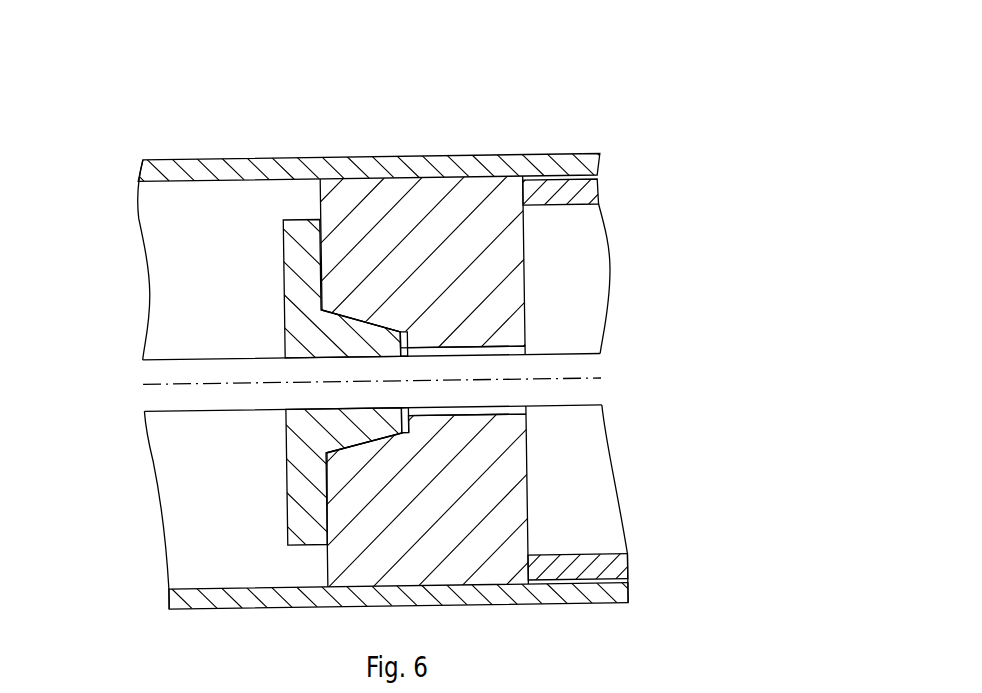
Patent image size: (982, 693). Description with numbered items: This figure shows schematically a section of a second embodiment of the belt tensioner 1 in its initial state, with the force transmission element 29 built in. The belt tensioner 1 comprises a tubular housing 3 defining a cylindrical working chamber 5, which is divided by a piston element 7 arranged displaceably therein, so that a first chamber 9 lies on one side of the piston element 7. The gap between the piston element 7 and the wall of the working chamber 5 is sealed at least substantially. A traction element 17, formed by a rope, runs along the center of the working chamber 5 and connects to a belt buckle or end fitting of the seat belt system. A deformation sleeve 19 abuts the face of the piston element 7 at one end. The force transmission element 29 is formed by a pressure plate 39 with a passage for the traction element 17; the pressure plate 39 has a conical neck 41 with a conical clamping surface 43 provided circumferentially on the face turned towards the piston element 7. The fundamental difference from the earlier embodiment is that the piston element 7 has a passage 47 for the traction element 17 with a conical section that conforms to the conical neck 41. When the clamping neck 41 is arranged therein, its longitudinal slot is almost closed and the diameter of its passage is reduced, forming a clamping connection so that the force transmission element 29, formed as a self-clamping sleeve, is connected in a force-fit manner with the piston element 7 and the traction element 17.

The belt tensioner 1 is at (643, 68).
The tubular housing 3 is at (548, 167).
The working chamber 5 is at (183, 284).
The piston element 7 is at (480, 206).
The first chamber 9 is at (180, 242).
The traction element 17 is at (172, 387).
The deformation sleeve 19 is at (581, 193).
The force transmission element 29 is at (279, 206).
The pressure plate 39 is at (297, 239).
The conical neck 41 is at (358, 337).
The conical clamping surface 43 is at (411, 333).
The passage 47 is at (493, 352).